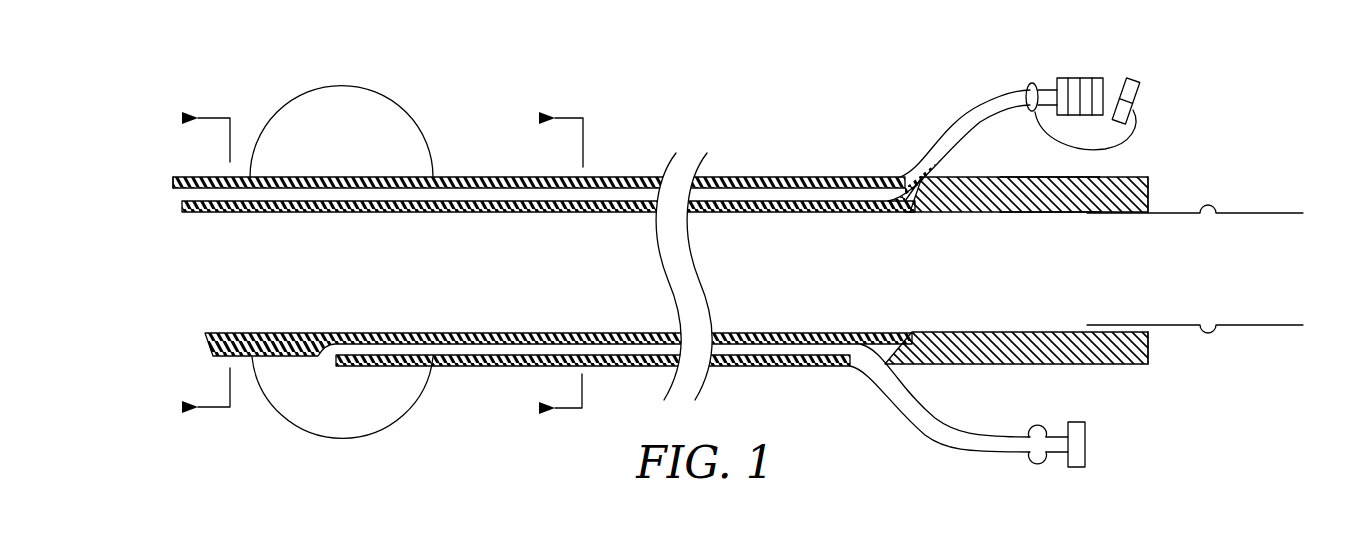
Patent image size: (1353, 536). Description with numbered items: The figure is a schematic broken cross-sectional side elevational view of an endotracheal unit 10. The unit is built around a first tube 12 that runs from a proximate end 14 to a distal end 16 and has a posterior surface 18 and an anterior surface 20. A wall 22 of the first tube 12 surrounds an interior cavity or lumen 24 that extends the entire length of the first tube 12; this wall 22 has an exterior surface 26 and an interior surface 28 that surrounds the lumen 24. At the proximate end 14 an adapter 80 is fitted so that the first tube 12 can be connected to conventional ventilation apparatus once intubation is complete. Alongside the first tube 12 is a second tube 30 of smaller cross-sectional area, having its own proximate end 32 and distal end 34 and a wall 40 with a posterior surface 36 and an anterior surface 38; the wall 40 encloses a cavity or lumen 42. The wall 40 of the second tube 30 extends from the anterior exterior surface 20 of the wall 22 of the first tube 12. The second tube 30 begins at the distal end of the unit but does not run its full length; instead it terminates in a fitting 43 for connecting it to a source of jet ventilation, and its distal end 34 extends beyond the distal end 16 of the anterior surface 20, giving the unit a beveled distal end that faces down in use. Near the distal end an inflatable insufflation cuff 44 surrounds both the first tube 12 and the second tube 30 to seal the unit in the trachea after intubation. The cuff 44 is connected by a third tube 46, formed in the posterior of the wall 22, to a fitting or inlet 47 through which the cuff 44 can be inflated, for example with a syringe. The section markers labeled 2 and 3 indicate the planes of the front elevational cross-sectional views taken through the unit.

The endotracheal unit 10 is at (857, 113).
The first tube 12 is at (1000, 177).
The proximate end 14 is at (1148, 193).
The distal end 16 is at (237, 333).
The posterior surface 18 is at (1027, 365).
The anterior surface 20 is at (1072, 177).
The wall 22 is at (1043, 201).
The lumen 24 is at (300, 284).
The exterior surface 26 is at (1130, 366).
The interior surface 28 is at (470, 213).
The second tube 30 is at (505, 177).
The proximate end 32 is at (975, 108).
The distal end 34 is at (182, 193).
The posterior surface 36 is at (918, 198).
The anterior surface 38 is at (806, 177).
The wall 40 is at (770, 178).
The lumen 42 is at (735, 195).
The fitting 43 is at (1077, 78).
The inflatable insufflation cuff 44 is at (378, 93).
The third tube 46 is at (770, 348).
The fitting or inlet 47 is at (1072, 468).
The adapter 80 is at (1283, 213).
The section line 2 is at (196, 263).
The section line 3 is at (549, 264).